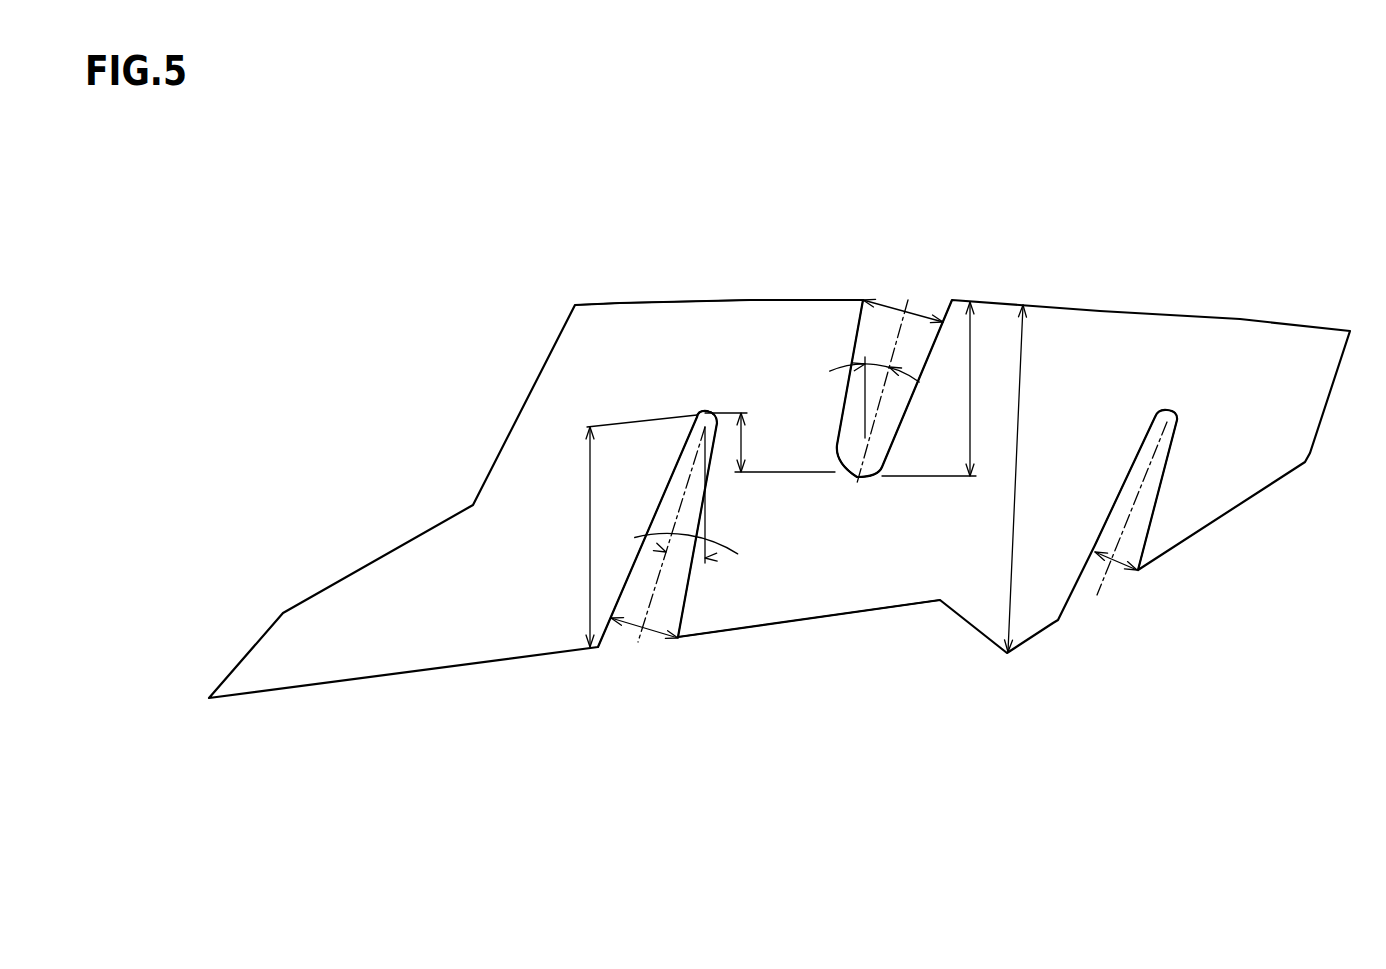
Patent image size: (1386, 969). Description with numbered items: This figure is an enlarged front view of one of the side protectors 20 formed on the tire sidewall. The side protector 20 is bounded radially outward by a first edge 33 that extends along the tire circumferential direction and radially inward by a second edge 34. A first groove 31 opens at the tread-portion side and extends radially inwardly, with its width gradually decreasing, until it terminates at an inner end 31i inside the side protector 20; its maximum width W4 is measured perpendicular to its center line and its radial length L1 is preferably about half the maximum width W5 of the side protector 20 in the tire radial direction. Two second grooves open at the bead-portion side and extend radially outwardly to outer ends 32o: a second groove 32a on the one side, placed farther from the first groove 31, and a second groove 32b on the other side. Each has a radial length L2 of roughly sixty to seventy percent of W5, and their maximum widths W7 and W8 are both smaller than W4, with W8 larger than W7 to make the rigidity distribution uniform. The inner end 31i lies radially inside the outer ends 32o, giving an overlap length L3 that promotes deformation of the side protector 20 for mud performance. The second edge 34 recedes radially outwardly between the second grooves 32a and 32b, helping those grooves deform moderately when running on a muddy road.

The side protector 20 is at (1185, 375).
The first groove 31 is at (850, 410).
The inner end of the first groove 31i is at (857, 478).
The second groove on the one side 32a is at (1143, 503).
The second groove on the other side 32b is at (672, 592).
The outer end of the second groove 32o is at (700, 412).
The first edge 33 is at (620, 302).
The second edge 34 is at (863, 612).
The length of the first groove L1 is at (973, 388).
The length of the second groove L2 is at (590, 537).
The overlap length L3 is at (745, 442).
The maximum width of the first groove W4 is at (892, 308).
The maximum width of the side protector W5 is at (1018, 478).
The maximum width of the second groove on the one side W7 is at (1115, 560).
The maximum width of the second groove on the other side W8 is at (637, 625).